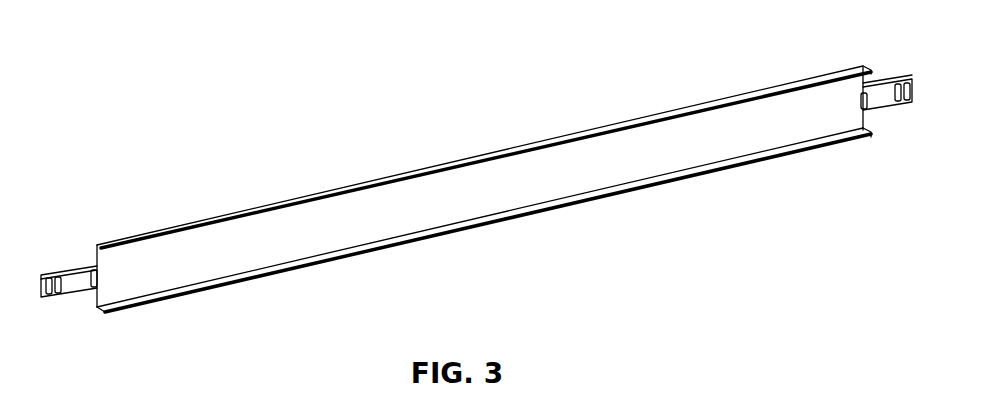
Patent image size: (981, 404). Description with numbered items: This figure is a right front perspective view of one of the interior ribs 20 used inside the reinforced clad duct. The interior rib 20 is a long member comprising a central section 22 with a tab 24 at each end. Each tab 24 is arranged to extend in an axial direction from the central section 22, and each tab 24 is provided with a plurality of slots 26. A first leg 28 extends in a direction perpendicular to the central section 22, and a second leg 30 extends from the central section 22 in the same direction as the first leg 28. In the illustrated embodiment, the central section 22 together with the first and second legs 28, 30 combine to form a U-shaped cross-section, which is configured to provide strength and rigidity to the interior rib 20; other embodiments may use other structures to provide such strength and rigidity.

The interior rib 20 is at (144, 112).
The central section 22 is at (675, 155).
The tab 24 is at (65, 293).
The slot 26 is at (50, 276).
The first leg 28 is at (405, 245).
The second leg 30 is at (193, 221).